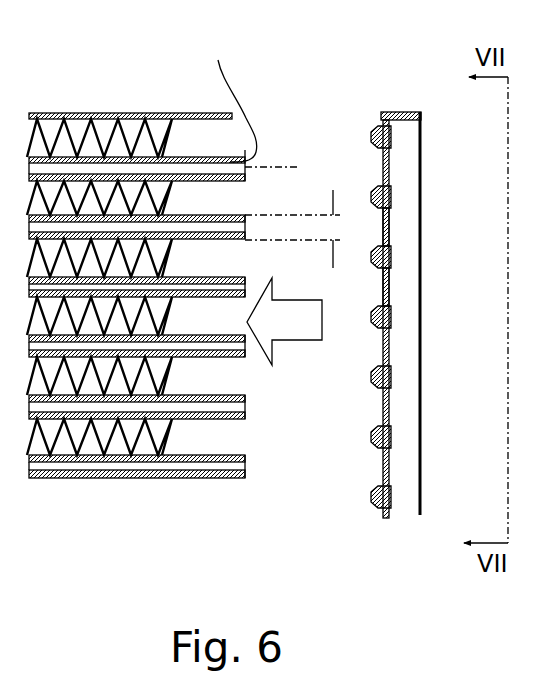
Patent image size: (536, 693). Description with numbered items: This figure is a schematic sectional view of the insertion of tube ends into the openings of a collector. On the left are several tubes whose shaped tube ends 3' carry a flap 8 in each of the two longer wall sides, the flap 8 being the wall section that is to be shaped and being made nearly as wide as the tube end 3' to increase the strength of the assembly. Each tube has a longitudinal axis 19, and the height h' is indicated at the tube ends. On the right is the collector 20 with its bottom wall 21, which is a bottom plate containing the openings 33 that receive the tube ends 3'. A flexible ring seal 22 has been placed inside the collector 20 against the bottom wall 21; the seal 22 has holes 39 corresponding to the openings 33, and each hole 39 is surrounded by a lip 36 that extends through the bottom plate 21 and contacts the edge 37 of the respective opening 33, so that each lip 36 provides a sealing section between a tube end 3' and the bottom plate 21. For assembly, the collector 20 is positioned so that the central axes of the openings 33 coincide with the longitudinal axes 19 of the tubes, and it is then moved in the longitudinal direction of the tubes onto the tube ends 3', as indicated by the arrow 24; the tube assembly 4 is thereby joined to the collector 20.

The bar pair 4 is at (170, 440).
The flap 8 is at (163, 114).
The shaped tube end 3' is at (235, 98).
The longitudinal axis 19 is at (290, 167).
The height h' is at (309, 151).
The arrow 24 is at (306, 342).
The bottom wall 21 is at (403, 106).
The collector 20 is at (410, 280).
The flexible ring seal 22 is at (393, 128).
The lip 36 is at (393, 188).
The opening 33 is at (390, 226).
The edge 37 is at (393, 261).
The hole 39 is at (388, 281).